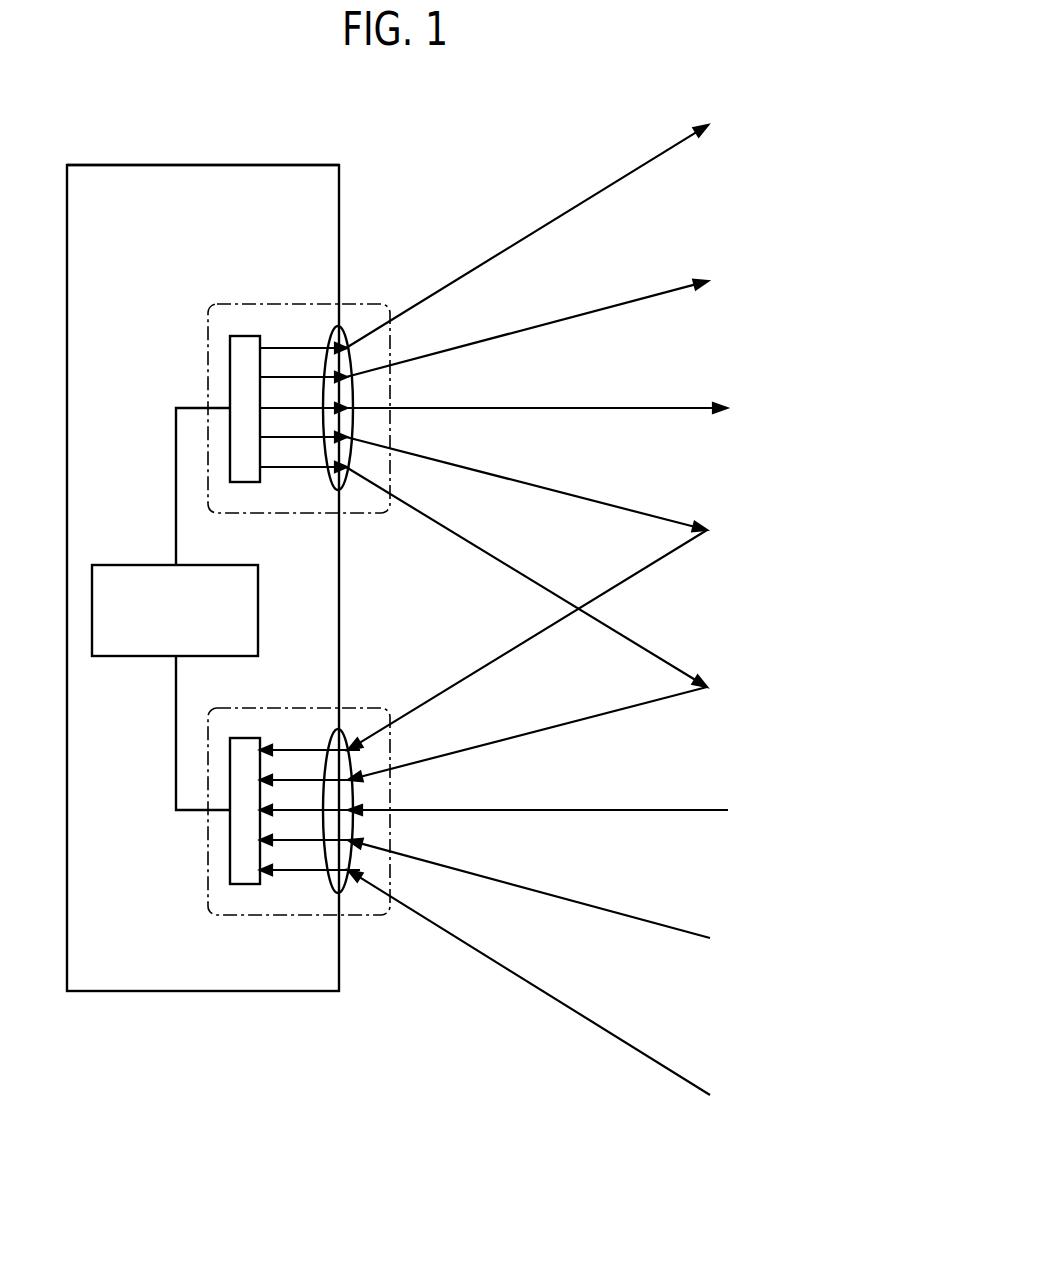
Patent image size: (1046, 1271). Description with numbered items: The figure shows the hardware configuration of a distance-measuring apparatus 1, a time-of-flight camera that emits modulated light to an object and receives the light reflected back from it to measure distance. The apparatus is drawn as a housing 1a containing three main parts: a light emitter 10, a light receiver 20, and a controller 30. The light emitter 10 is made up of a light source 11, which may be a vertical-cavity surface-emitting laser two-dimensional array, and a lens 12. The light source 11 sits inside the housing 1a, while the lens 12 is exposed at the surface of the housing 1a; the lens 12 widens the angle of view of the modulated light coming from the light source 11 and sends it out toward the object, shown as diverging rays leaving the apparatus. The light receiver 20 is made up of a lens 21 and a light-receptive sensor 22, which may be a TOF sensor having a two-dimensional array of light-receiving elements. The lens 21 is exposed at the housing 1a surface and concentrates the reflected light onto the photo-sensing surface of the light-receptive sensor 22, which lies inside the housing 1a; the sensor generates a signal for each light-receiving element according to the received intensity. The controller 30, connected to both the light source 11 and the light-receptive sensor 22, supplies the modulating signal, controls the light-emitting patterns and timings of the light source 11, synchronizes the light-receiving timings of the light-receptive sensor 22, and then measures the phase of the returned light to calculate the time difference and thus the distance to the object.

The distance-measuring apparatus 1 is at (233, 146).
The housing 1a is at (280, 165).
The light emitter 10 is at (208, 330).
The light source 11 is at (246, 482).
The lens 12 is at (335, 490).
The light receiver 20 is at (208, 884).
The lens 21 is at (335, 893).
The light-receptive sensor 22 is at (246, 884).
The controller 30 is at (137, 565).